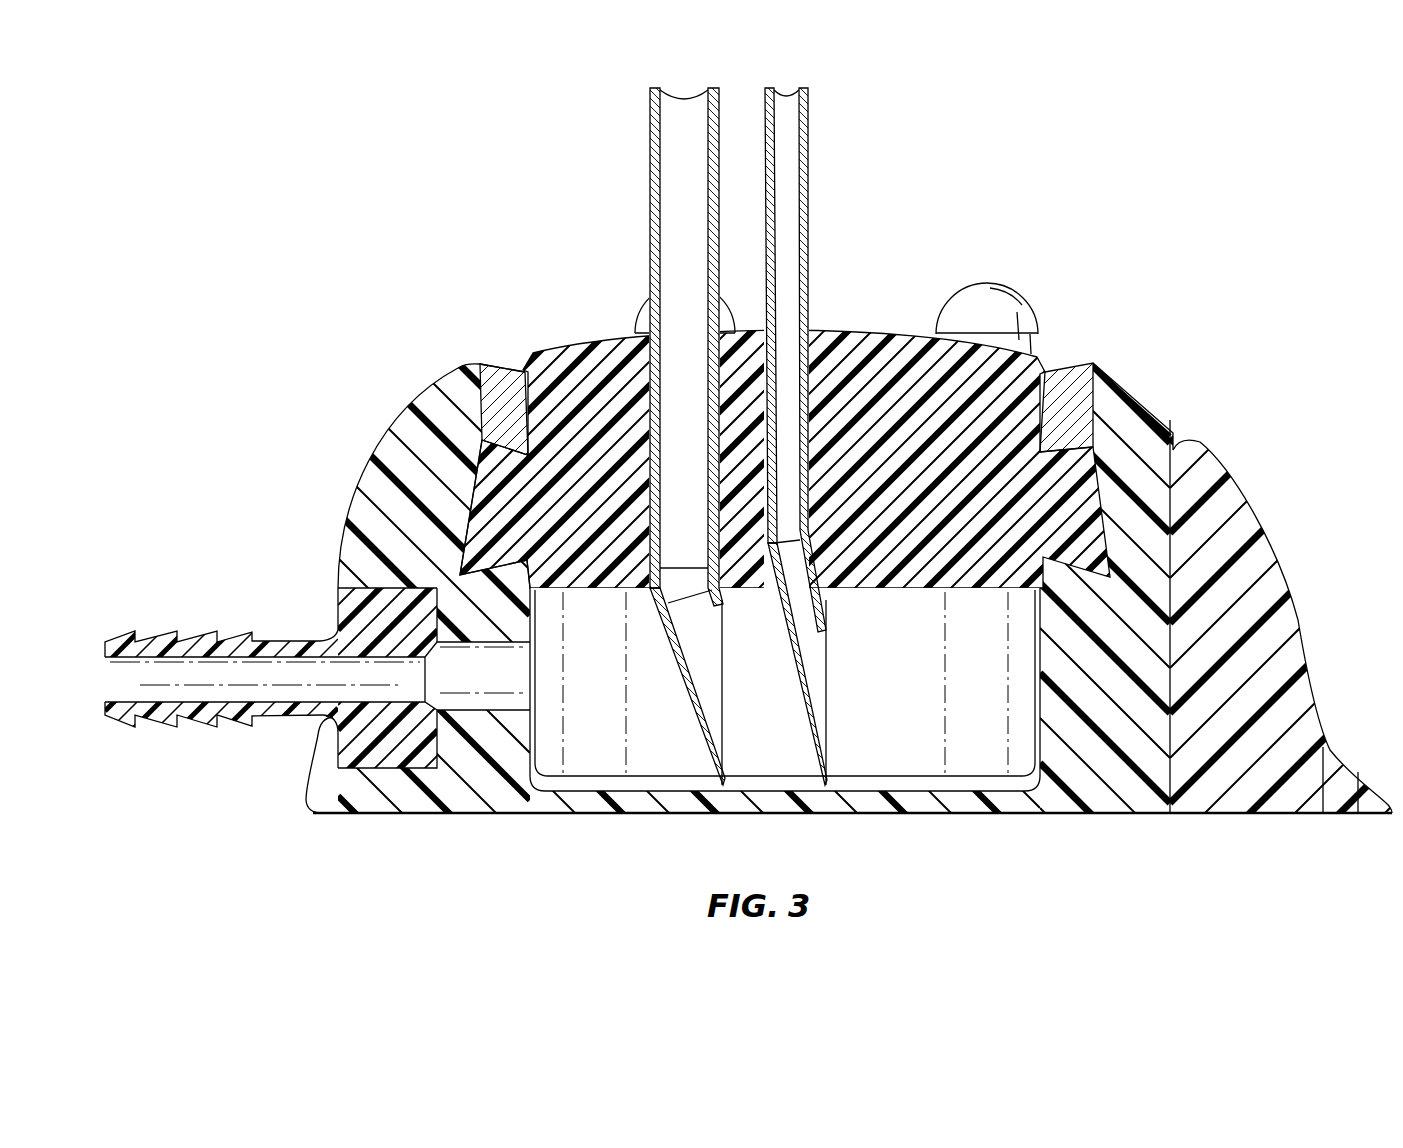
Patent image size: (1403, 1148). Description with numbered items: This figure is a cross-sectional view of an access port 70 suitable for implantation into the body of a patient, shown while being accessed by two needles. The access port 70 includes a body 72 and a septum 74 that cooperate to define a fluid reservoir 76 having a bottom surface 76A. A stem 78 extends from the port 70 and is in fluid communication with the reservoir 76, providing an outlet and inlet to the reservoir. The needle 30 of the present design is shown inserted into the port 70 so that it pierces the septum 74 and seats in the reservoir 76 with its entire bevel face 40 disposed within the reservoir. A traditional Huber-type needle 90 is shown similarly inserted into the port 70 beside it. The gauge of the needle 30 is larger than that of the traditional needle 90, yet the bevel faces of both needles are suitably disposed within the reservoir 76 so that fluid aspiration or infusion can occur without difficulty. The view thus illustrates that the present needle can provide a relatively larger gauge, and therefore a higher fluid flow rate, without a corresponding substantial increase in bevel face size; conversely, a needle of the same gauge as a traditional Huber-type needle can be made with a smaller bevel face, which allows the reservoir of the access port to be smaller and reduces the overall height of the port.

The needle 30 is at (650, 174).
The bevel face 40 is at (728, 605).
The access port 70 is at (1192, 338).
The body 72 is at (1275, 578).
The septum 74 is at (582, 360).
The fluid reservoir 76 is at (906, 709).
The bottom surface 76A is at (913, 795).
The stem 78 is at (243, 630).
The traditional Huber-type needle 90 is at (807, 195).